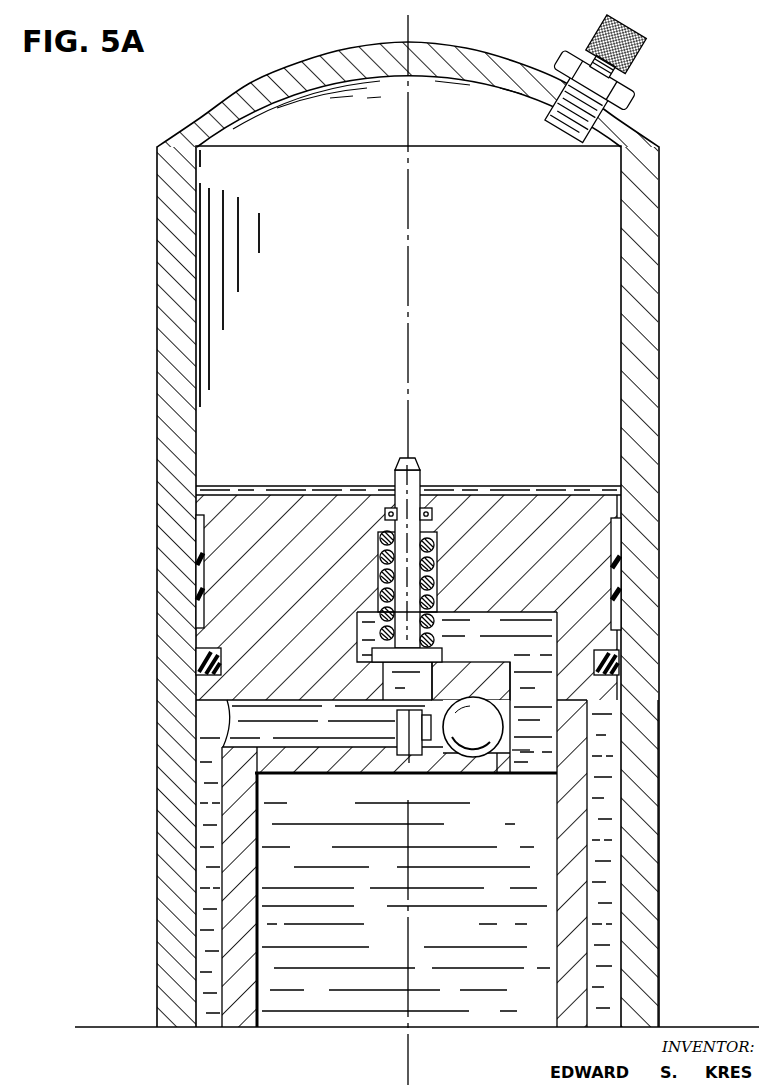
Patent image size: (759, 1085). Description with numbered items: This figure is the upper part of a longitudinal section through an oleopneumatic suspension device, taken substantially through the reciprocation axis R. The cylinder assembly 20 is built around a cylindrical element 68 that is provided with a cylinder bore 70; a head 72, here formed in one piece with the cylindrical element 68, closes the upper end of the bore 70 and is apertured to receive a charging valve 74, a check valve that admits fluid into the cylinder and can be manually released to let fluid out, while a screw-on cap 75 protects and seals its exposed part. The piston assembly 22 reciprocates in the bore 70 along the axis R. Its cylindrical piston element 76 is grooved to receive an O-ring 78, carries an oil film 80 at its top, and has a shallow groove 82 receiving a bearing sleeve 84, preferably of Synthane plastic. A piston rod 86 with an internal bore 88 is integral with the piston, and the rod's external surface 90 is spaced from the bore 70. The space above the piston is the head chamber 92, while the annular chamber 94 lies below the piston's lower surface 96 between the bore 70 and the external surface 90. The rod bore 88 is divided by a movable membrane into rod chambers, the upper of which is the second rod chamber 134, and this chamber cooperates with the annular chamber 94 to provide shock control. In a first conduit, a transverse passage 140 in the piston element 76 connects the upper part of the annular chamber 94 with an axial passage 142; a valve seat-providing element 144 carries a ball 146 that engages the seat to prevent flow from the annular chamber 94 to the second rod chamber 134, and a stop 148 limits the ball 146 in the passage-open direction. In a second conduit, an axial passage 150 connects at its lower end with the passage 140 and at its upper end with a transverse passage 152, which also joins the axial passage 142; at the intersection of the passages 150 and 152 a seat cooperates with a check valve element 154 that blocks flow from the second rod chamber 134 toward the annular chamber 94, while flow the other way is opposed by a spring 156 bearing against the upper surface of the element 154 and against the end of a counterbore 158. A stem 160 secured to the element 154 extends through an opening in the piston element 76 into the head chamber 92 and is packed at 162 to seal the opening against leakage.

The cylinder assembly 20 is at (148, 508).
The piston assembly 22 is at (198, 695).
The cylindrical element 68 is at (648, 768).
The cylinder bore 70 is at (638, 370).
The head 72 is at (233, 108).
The charging valve 74 is at (578, 117).
The screw-on cap 75 is at (627, 57).
The cylindrical piston element 76 is at (236, 587).
The O-ring 78 is at (612, 668).
The oil film 80 is at (300, 486).
The shallow groove 82 is at (614, 590).
The bearing sleeve 84 is at (617, 537).
The piston rod 86 is at (243, 1020).
The internal bore 88 is at (259, 953).
The external surface 90 is at (588, 953).
The head chamber 92 is at (584, 282).
The annular chamber 94 is at (205, 1012).
The lower surface 96 is at (612, 704).
The second rod chamber 134 is at (360, 1002).
The transverse passage 140 is at (270, 733).
The axial passage 142 is at (532, 752).
The valve seat-providing element 144 is at (501, 755).
The ball 146 is at (462, 735).
The stop 148 is at (400, 728).
The axial passage 150 is at (383, 663).
The transverse passage 152 is at (484, 613).
The check valve element 154 is at (411, 662).
The spring 156 is at (430, 624).
The counterbore 158 is at (382, 540).
The stem 160 is at (416, 464).
The packing 162 is at (430, 513).
The reciprocation axis R is at (410, 942).